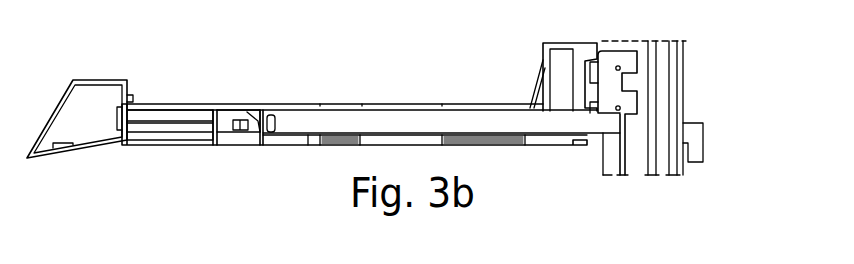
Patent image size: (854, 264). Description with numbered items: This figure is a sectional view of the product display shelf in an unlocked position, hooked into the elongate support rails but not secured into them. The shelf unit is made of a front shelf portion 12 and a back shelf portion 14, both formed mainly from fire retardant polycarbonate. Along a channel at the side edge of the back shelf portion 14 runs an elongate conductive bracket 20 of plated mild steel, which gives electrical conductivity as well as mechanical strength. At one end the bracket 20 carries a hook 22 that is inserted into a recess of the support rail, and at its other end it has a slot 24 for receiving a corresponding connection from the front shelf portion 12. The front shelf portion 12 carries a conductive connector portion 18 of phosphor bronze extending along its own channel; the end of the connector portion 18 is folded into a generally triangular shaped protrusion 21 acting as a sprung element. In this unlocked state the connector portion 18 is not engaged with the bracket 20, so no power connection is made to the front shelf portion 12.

The front shelf portion 12 is at (163, 105).
The back shelf portion 14 is at (343, 105).
The connector portion 18 is at (177, 125).
The conductive bracket 20 is at (450, 123).
The triangular shaped protrusion 21 is at (245, 112).
The hook 22 is at (640, 60).
The slot 24 is at (272, 113).